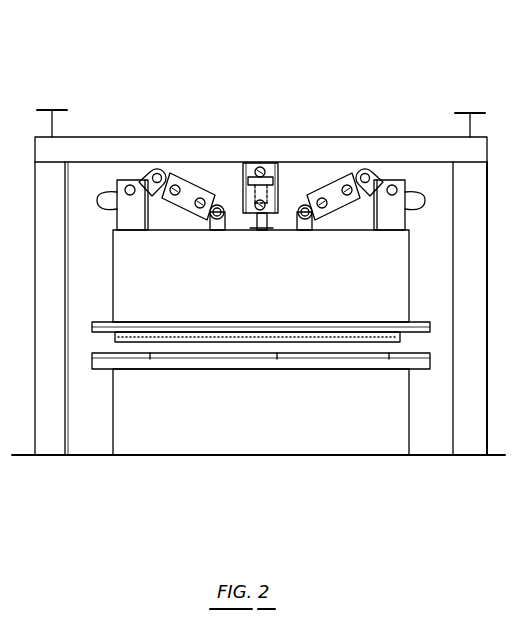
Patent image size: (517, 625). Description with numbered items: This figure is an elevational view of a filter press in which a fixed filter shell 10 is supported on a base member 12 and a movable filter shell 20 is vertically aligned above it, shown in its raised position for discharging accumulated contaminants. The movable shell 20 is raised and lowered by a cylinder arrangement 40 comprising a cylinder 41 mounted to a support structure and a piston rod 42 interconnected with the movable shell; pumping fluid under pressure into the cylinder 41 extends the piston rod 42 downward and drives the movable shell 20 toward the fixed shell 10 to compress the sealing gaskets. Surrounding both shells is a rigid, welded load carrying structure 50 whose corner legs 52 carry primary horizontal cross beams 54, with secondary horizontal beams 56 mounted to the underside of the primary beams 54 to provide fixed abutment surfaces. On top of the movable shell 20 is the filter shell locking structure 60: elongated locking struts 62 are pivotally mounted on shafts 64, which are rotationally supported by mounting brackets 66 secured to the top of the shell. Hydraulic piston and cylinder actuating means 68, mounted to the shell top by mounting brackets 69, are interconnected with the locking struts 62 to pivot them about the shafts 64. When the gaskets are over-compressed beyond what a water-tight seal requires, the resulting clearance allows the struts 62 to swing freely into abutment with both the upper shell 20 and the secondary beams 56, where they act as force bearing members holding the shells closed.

The fixed filter shell 10 is at (416, 432).
The base member 12 is at (80, 458).
The movable filter shell 20 is at (416, 271).
The cylinder arrangement 40 is at (276, 186).
The cylinder 41 is at (242, 177).
The piston rod 42 is at (262, 224).
The load carrying structure 50 is at (272, 254).
The corner legs 52 is at (52, 443).
The primary horizontal cross beams 54 is at (52, 110).
The secondary horizontal beams 56 is at (183, 143).
The filter shell locking structure 60 is at (261, 198).
The locking struts 62 is at (107, 190).
The shafts 64 is at (130, 185).
The mounting brackets 66 is at (132, 222).
The hydraulic piston and cylinder actuating means 68 is at (188, 207).
The mounting brackets 69 is at (217, 220).